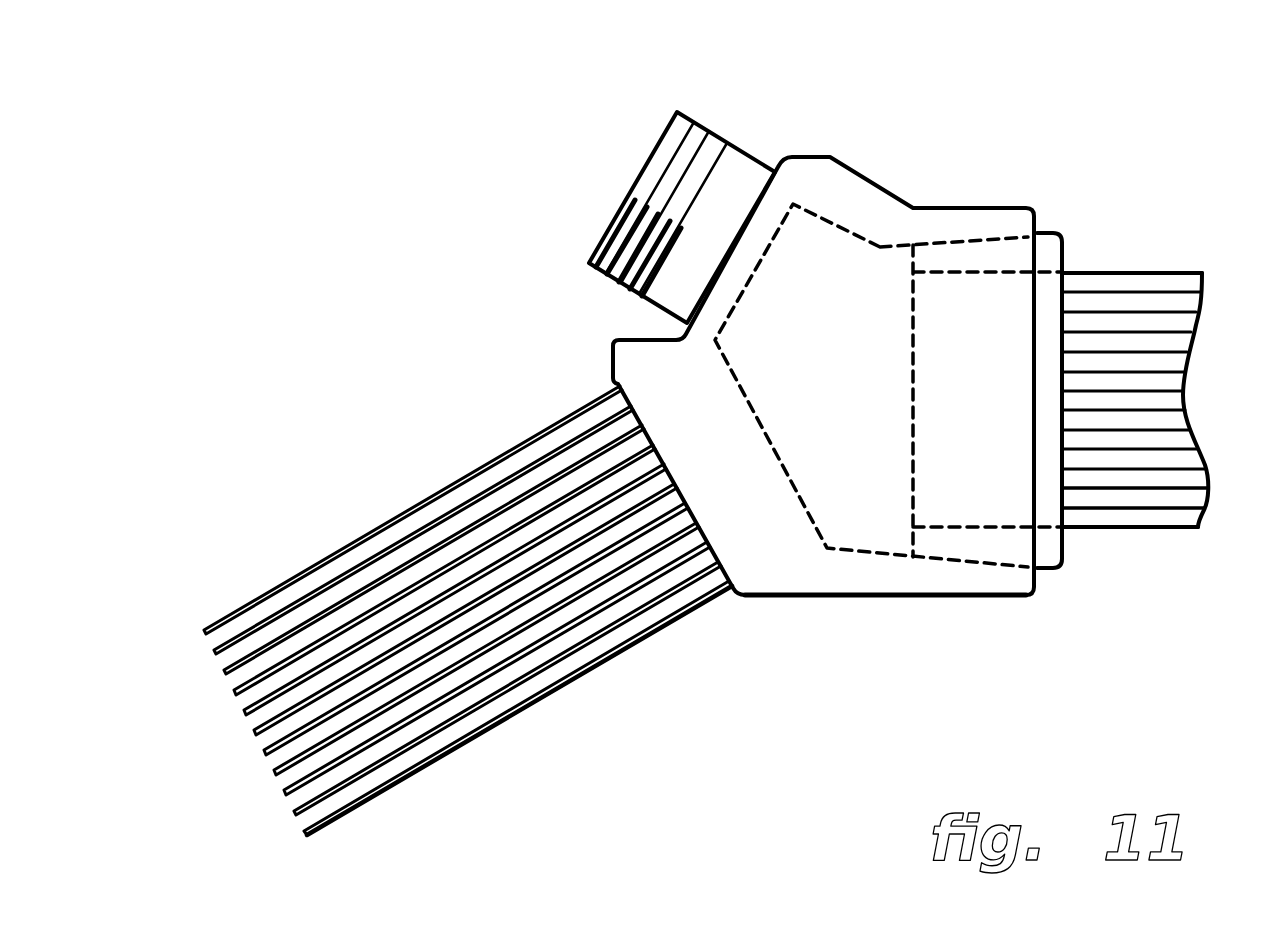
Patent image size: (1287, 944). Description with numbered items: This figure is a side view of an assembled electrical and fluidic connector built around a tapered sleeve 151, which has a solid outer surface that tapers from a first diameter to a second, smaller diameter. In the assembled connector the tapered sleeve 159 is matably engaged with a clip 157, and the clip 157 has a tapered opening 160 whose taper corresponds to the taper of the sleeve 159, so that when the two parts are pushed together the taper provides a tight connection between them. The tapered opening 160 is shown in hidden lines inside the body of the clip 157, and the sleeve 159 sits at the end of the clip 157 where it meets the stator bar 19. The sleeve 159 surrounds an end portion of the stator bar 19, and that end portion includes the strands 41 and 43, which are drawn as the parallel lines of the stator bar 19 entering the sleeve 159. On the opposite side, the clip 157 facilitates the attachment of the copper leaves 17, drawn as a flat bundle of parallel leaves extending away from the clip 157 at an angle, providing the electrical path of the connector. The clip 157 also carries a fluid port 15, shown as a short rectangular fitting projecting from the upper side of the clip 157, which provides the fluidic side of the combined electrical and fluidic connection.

The fluid port 15 is at (740, 151).
The copper leaves 17 is at (514, 713).
The stator bar 19 is at (1173, 272).
The strands 41 is at (1087, 515).
The strands 43 is at (1140, 497).
The tapered sleeve 151 is at (1042, 572).
The clip 157 is at (1020, 605).
The sleeve 159 is at (1040, 233).
The tapered opening 160 is at (998, 237).